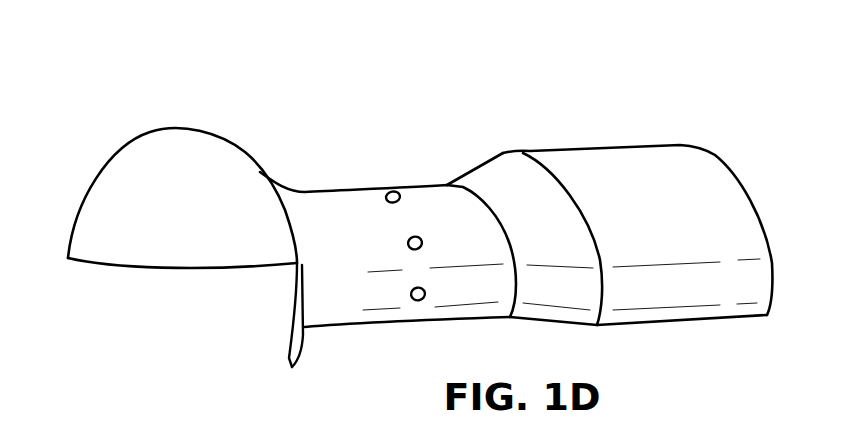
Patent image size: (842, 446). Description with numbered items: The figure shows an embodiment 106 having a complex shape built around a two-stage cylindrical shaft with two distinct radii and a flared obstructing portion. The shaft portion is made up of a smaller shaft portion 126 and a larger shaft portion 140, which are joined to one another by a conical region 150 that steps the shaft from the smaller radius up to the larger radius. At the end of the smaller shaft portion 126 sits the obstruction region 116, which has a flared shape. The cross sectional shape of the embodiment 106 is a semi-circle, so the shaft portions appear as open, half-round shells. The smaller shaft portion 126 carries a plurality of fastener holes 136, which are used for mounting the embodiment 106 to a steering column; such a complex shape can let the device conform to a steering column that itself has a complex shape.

The embodiment 106 is at (669, 124).
The obstruction region 116 is at (123, 183).
The smaller shaft portion 126 is at (420, 187).
The fastener holes 136 is at (421, 297).
The conical region 150 is at (520, 178).
The larger shaft portion 140 is at (690, 293).